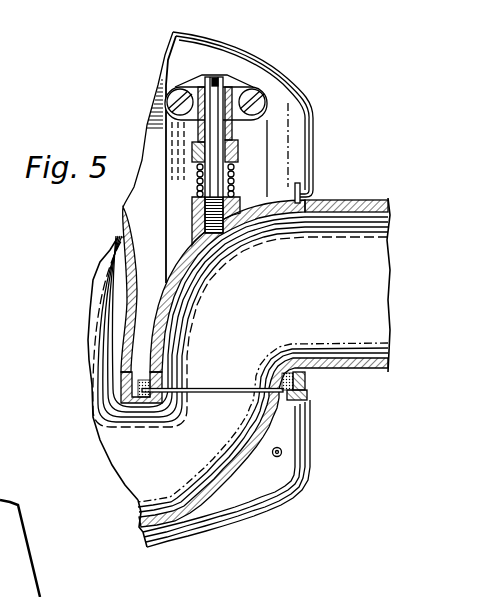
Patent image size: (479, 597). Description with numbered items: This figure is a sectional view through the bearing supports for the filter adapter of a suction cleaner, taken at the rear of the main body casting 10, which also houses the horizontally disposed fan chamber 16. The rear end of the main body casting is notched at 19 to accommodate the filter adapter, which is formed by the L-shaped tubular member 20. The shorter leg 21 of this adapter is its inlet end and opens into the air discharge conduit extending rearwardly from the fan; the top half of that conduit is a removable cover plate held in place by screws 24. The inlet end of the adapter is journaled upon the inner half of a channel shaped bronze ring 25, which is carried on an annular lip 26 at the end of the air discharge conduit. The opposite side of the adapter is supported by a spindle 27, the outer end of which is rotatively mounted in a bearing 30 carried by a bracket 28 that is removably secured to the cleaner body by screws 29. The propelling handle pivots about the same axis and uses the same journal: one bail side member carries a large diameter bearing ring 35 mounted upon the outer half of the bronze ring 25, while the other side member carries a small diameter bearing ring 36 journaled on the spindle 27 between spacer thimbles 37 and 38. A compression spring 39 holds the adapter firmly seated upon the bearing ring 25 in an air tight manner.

The main body casting 10 is at (242, 497).
The fan chamber 16 is at (132, 297).
The notch 19 is at (309, 197).
The L-shaped tubular member 20 is at (354, 211).
The shorter leg 21 is at (158, 326).
The screws 24 is at (282, 450).
The channel shaped bronze ring 25 is at (306, 380).
The annular lip 26 is at (289, 398).
The spindle 27 is at (216, 76).
The bracket 28 is at (243, 88).
The screws 29 is at (260, 103).
The bearing 30 is at (235, 78).
The large diameter bearing ring 35 is at (307, 388).
The small diameter bearing ring 36 is at (195, 152).
The spacer thimble 37 is at (233, 134).
The spacer thimble 38 is at (233, 196).
The compression spring 39 is at (236, 178).